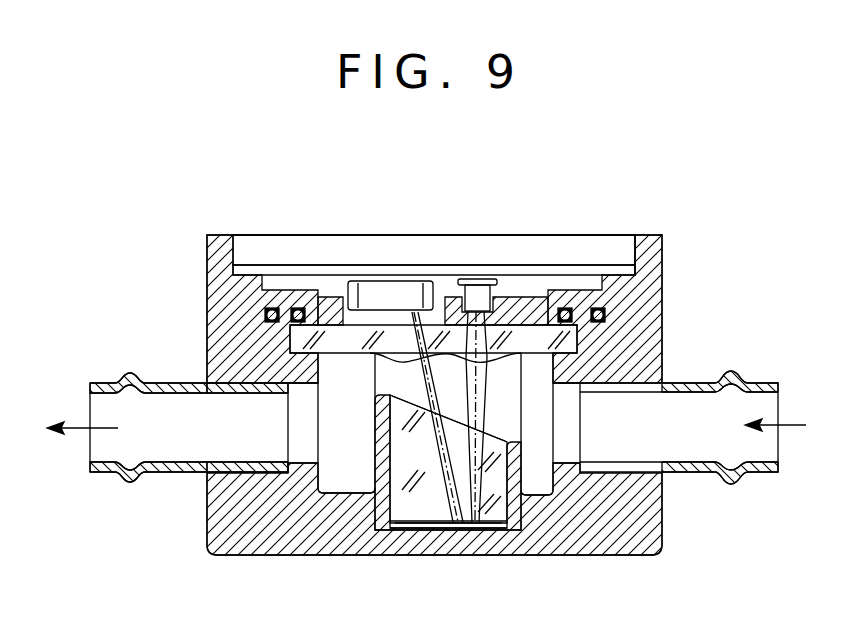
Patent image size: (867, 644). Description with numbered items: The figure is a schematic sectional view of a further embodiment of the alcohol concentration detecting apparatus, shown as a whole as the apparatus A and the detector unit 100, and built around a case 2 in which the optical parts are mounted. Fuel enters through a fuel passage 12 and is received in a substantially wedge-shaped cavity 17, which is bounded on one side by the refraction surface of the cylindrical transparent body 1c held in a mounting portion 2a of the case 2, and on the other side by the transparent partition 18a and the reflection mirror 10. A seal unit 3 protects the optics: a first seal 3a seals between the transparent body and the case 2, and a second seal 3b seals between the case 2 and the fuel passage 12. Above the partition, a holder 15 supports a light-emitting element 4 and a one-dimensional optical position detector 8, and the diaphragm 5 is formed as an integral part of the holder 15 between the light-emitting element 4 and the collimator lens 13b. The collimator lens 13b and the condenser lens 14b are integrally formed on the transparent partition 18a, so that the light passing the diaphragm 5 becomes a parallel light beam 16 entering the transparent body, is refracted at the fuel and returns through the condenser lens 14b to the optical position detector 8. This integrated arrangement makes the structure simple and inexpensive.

The sensor unit A is at (160, 240).
The case 2 is at (612, 528).
The prism holding portion 2a is at (378, 478).
The cylindrical transparent body 1c is at (399, 528).
The reflection mirror 10 is at (436, 530).
The fuel passage 12 is at (302, 478).
The collimator lens 13b is at (497, 353).
The condenser lens 14b is at (380, 357).
The holder 15 is at (330, 297).
The light beam 16 is at (484, 412).
The wedge-shaped cavity 17 is at (600, 381).
The transparent partition 18a is at (300, 338).
The seal unit 3 is at (510, 263).
The first seal 3a is at (582, 293).
The second seal 3b is at (590, 310).
The light-emitting element 4 is at (475, 281).
The diaphragm 5 is at (513, 296).
The optical position detector 8 is at (390, 290).
The sensor module 100 is at (563, 262).